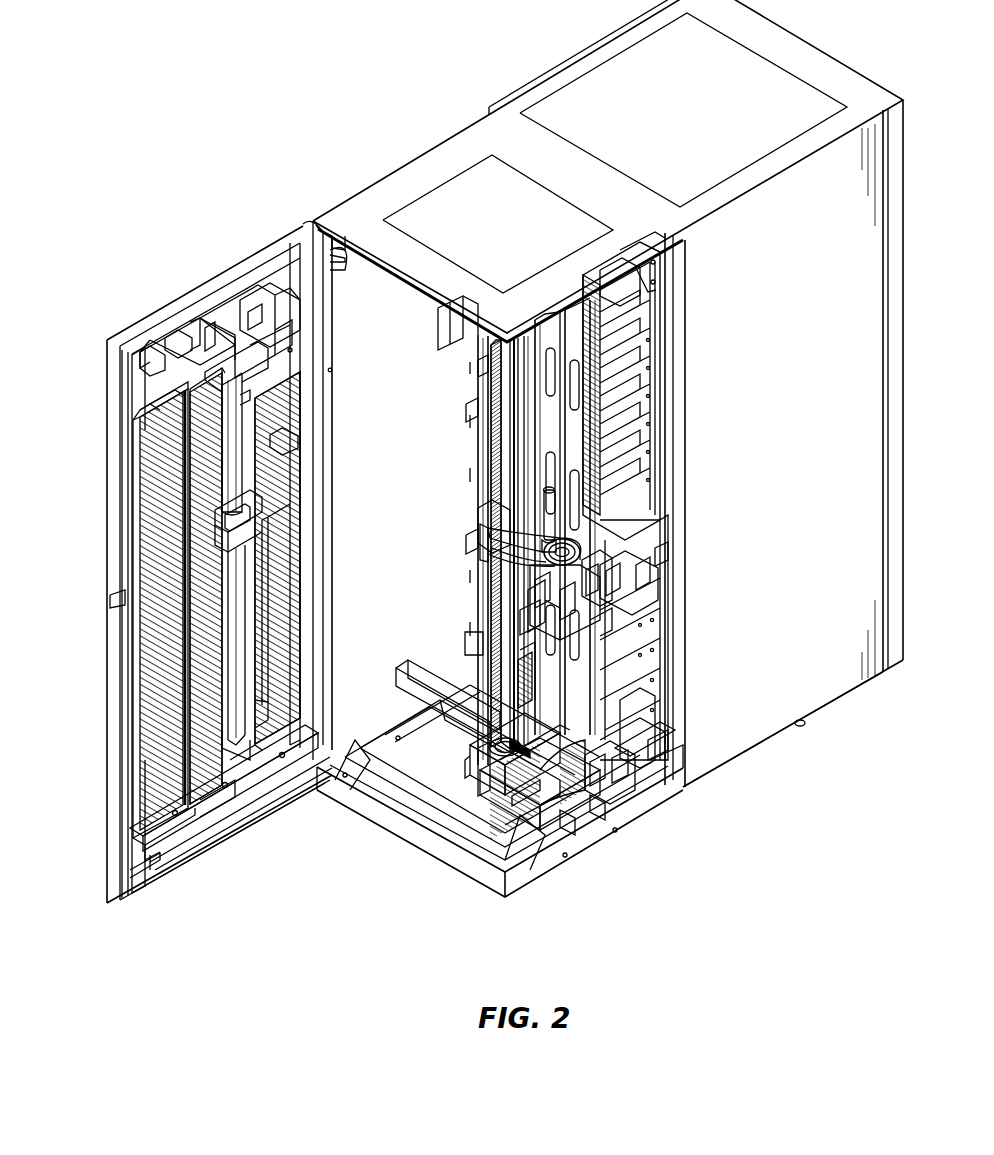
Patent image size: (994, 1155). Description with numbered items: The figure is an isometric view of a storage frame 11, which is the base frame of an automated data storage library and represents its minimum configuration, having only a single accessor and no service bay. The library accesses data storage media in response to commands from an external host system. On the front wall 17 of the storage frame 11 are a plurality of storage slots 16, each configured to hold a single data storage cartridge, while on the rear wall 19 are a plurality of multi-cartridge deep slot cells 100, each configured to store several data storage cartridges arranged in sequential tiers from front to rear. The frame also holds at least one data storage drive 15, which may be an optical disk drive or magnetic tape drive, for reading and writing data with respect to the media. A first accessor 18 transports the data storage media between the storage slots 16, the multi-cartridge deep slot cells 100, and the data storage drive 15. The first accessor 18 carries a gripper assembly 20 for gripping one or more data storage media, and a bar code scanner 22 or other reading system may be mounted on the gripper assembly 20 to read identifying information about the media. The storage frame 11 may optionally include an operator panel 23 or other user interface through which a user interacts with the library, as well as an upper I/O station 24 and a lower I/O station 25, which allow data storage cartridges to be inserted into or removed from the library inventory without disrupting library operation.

The storage frame 11 is at (398, 908).
The data storage drive 15 is at (660, 330).
The storage slots 16 is at (132, 702).
The front wall 17 is at (120, 528).
The first accessor 18 is at (537, 780).
The rear wall 19 is at (478, 378).
The gripper assembly 20 is at (632, 566).
The bar code scanner 22 is at (522, 606).
The operator panel 23 is at (285, 345).
The upper I/O station 24 is at (265, 400).
The lower I/O station 25 is at (265, 630).
The multi-cartridge deep slot cells 100 is at (492, 470).